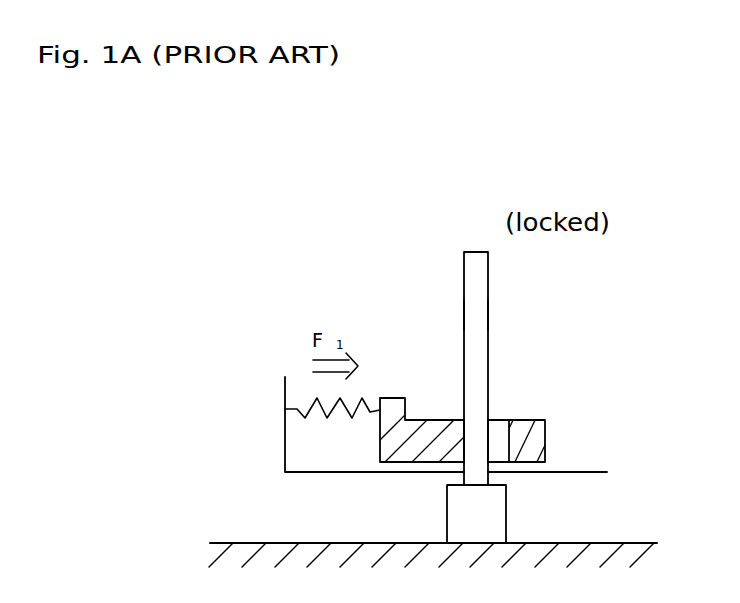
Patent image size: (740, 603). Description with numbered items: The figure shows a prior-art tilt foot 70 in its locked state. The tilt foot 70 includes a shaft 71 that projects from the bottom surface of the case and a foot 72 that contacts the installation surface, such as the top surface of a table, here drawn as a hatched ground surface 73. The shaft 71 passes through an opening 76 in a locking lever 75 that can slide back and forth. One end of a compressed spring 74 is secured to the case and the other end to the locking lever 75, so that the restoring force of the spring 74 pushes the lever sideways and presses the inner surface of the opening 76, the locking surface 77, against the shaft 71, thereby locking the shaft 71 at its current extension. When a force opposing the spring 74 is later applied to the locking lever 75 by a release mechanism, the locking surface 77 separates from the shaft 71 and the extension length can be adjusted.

The tilt foot 70 is at (488, 265).
The shaft 71 is at (482, 312).
The foot 72 is at (506, 505).
The base 73 is at (238, 542).
The compressed spring 74 is at (322, 432).
The locking lever 75 is at (403, 462).
The opening 76 is at (500, 432).
The locking surface 77 is at (462, 446).